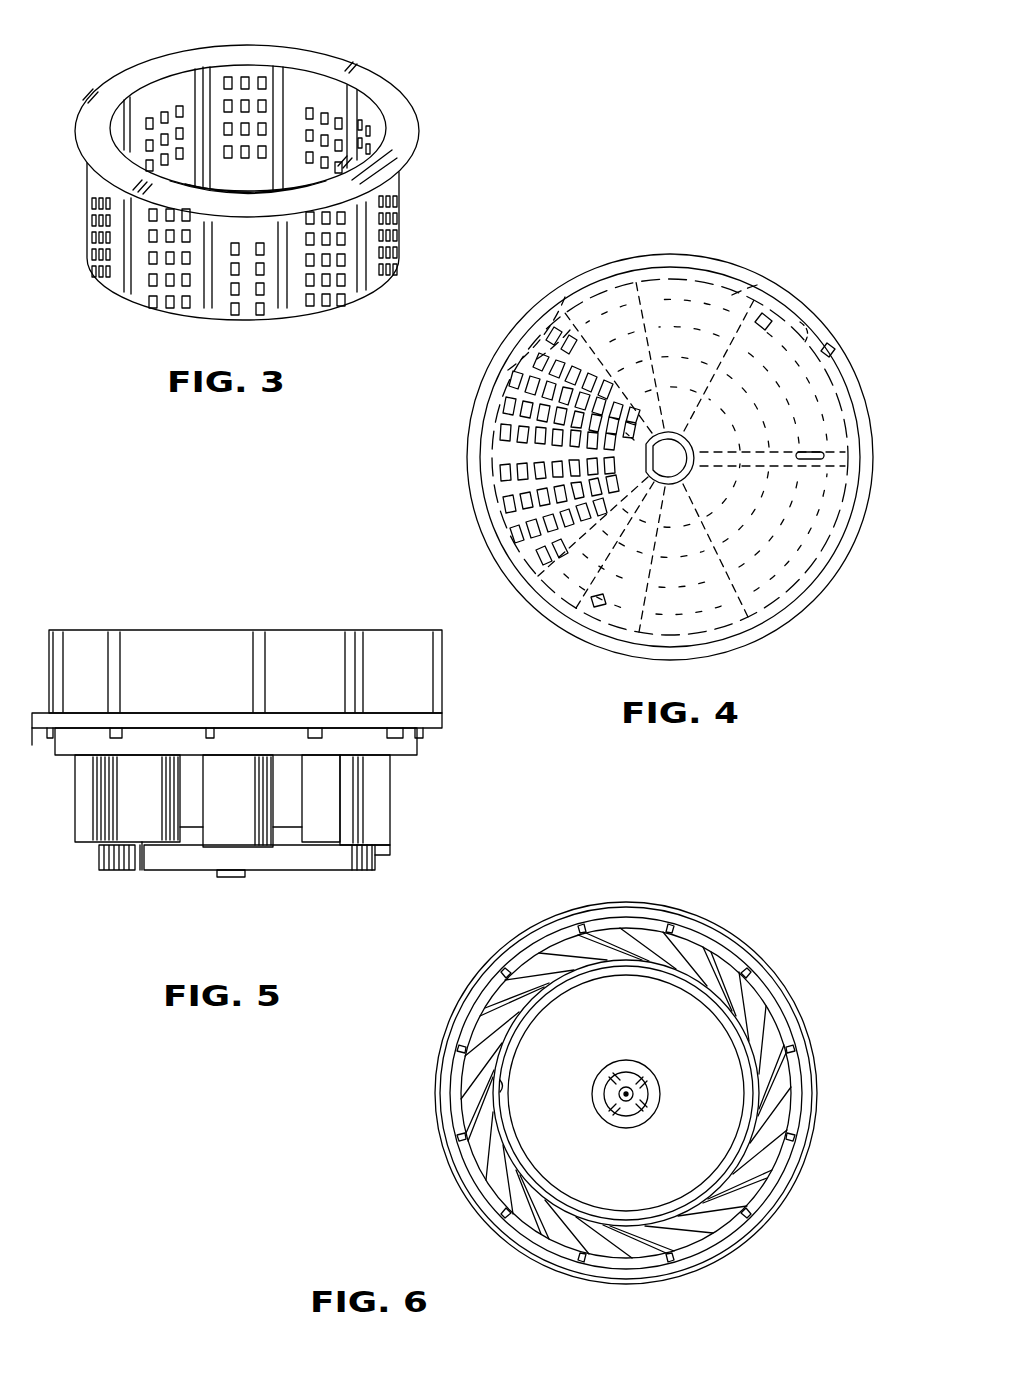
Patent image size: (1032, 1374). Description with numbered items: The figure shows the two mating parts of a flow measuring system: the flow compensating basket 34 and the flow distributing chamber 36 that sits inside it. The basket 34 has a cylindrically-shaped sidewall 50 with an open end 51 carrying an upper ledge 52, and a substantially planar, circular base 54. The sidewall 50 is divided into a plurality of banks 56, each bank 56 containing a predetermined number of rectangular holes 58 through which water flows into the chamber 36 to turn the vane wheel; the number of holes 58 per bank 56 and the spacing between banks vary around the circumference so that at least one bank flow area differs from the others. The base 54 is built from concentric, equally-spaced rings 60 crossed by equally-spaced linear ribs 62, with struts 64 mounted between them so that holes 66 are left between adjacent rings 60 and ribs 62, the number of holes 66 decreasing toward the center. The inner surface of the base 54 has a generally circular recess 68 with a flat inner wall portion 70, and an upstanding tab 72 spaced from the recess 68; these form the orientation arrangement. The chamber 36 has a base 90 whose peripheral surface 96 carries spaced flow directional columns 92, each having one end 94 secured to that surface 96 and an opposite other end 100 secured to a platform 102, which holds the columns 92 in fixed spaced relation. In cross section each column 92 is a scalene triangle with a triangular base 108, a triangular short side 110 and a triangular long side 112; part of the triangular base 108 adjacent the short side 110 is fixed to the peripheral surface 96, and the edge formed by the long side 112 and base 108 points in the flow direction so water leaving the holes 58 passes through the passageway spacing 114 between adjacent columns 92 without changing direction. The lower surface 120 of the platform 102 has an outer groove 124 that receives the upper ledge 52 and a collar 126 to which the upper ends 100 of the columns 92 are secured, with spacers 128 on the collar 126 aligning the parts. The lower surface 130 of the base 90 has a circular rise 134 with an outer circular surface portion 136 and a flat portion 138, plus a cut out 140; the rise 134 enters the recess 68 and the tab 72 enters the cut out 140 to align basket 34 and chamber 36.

In FIG. 3, the flow compensating basket 34 is at (271, 176).
In FIG. 4, the flow compensating basket 34 is at (665, 428).
In FIG. 5, the flow distributing chamber 36 is at (267, 755).
In FIG. 6, the flow distributing chamber 36 is at (619, 1065).
In FIG. 3, the sidewall 50 is at (281, 86).
In FIG. 4, the sidewall 50 is at (668, 263).
In FIG. 3, the open end 51 is at (192, 93).
In FIG. 3, the upper ledge 52 is at (393, 96).
In FIG. 4, the upper ledge 52 is at (468, 433).
In FIG. 3, the base 54 is at (213, 178).
In FIG. 4, the base 54 is at (780, 522).
In FIG. 3, the bank 56 is at (157, 103).
In FIG. 3, the holes 58 is at (284, 78).
In FIG. 4, the rings 60 is at (748, 300).
In FIG. 4, the ribs 62 is at (588, 317).
In FIG. 4, the struts 64 is at (770, 318).
In FIG. 4, the holes 66 is at (805, 331).
In FIG. 4, the circular recess 68 is at (680, 452).
In FIG. 4, the flat inner wall portion 70 is at (627, 432).
In FIG. 4, the upstanding tab 72 is at (823, 467).
In FIG. 5, the base 90 is at (204, 884).
In FIG. 6, the base 90 is at (535, 1128).
In FIG. 5, the flow directional columns 92 is at (95, 830).
In FIG. 6, the flow directional columns 92 is at (482, 1133).
In FIG. 5, the end 94 is at (377, 851).
In FIG. 6, the end 94 is at (809, 1091).
In FIG. 5, the peripheral surface 96 is at (370, 856).
In FIG. 5, the other end 100 is at (140, 747).
In FIG. 5, the platform 102 is at (444, 718).
In FIG. 6, the triangular base 108 is at (548, 990).
In FIG. 6, the triangular short side 110 is at (649, 914).
In FIG. 5, the triangular long side 112 is at (146, 856).
In FIG. 6, the triangular long side 112 is at (720, 926).
In FIG. 5, the passageway spacing 114 is at (118, 805).
In FIG. 6, the passageway spacing 114 is at (757, 990).
In FIG. 5, the lower surface 120 is at (32, 730).
In FIG. 6, the lower surface 120 is at (531, 1245).
In FIG. 6, the outer groove 124 is at (552, 1265).
In FIG. 5, the collar 126 is at (418, 753).
In FIG. 6, the collar 126 is at (683, 1277).
In FIG. 5, the spacers 128 is at (223, 731).
In FIG. 6, the lower surface 130 is at (532, 1099).
In FIG. 5, the circular rise 134 is at (230, 888).
In FIG. 6, the circular rise 134 is at (608, 1049).
In FIG. 6, the outer circular surface portion 136 is at (660, 1079).
In FIG. 6, the flat portion 138 is at (657, 1098).
In FIG. 6, the cut out 140 is at (500, 1085).